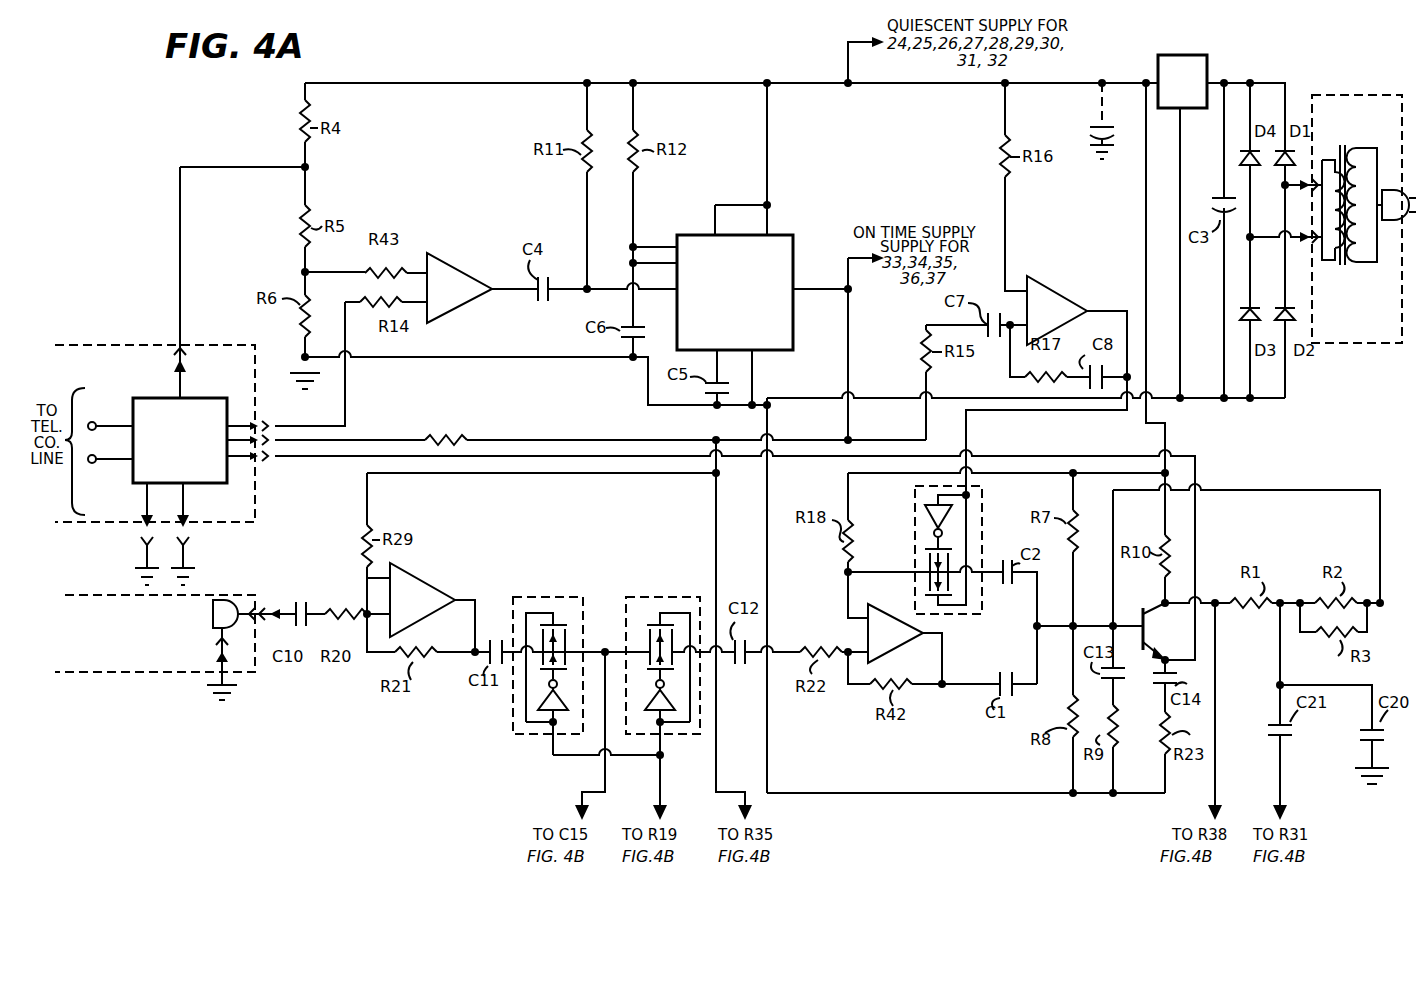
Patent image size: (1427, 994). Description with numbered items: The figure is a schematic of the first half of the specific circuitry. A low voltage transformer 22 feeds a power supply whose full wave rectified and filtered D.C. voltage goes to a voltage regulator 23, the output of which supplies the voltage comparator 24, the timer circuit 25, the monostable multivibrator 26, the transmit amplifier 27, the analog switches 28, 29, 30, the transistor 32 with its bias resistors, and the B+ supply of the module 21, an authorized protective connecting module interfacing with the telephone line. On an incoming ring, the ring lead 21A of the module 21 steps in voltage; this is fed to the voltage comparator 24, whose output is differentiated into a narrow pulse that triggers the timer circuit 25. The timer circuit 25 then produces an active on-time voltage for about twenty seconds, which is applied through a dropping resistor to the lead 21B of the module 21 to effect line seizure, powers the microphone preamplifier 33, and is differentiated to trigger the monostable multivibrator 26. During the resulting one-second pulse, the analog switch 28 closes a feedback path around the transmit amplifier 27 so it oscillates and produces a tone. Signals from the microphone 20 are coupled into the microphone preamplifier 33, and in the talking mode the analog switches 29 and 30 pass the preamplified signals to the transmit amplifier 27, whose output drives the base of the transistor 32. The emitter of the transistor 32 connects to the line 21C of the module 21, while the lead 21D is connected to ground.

The microphone 20 is at (212, 614).
The module 21 is at (215, 398).
The ring lead 21A is at (346, 386).
The lead 21B is at (373, 438).
The line 21C is at (312, 459).
The lead 21D is at (183, 508).
The low voltage transformer 22 is at (1354, 156).
The voltage regulator 23 is at (1207, 70).
The voltage comparator 24 is at (468, 298).
The timer circuit 25 is at (708, 232).
The monostable multivibrator 26 is at (1068, 321).
The transmit amplifier 27 is at (908, 646).
The analog switch 28 is at (900, 510).
The analog switch 29 is at (558, 590).
The analog switch 30 is at (658, 590).
The transistor 32 is at (1148, 620).
The microphone preamplifier 33 is at (431, 611).